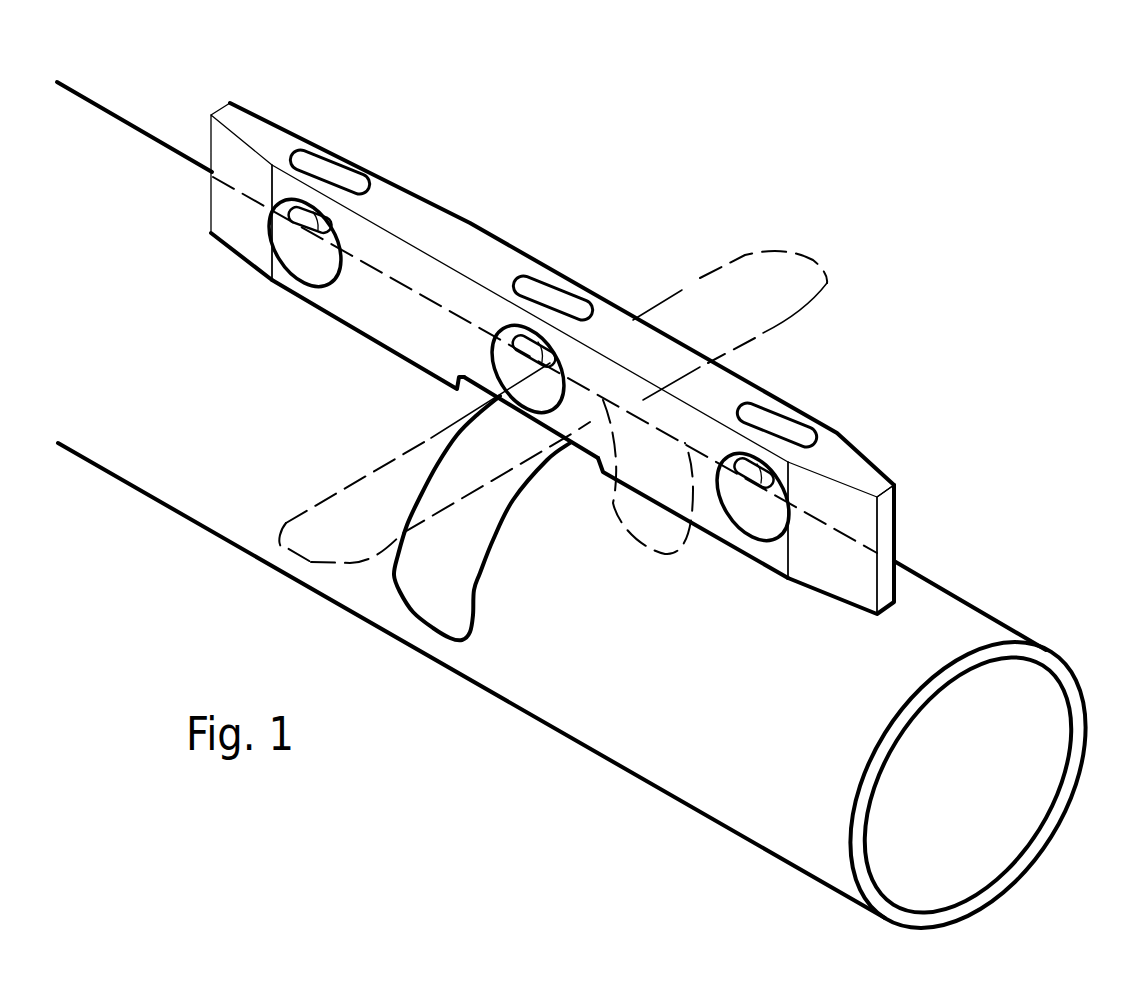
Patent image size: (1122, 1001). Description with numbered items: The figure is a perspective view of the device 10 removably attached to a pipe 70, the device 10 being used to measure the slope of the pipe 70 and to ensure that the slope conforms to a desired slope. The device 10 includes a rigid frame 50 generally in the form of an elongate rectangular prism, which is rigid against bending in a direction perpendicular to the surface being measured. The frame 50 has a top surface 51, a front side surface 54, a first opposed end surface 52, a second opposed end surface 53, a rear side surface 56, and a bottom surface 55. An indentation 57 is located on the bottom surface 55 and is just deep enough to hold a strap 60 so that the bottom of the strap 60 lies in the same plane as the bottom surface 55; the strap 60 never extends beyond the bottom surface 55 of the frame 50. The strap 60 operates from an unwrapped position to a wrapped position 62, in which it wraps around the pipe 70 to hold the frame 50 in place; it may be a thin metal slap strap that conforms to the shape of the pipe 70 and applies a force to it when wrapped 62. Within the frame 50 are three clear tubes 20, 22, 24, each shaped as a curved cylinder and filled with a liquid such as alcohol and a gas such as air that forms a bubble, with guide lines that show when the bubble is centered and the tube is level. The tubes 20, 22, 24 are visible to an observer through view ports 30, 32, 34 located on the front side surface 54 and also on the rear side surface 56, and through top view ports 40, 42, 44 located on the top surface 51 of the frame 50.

The device 10 is at (478, 163).
The tube 20 is at (293, 207).
The tube 22 is at (515, 336).
The tube 24 is at (747, 470).
The view port 30 is at (350, 253).
The view port 32 is at (562, 388).
The view port 34 is at (790, 508).
The top view port 40 is at (325, 173).
The top view port 42 is at (557, 303).
The top view port 44 is at (780, 427).
The frame 50 is at (468, 220).
The top surface 51 is at (427, 220).
The first opposed end surface 52 is at (210, 140).
The second end surface 53 is at (882, 542).
The front side surface 54 is at (369, 320).
The bottom surface 55 is at (747, 555).
The rear side surface 56 is at (733, 375).
The indentation 57 is at (600, 458).
The strap 60 is at (312, 538).
The wrapped position 62 is at (417, 588).
The pipe 70 is at (757, 805).